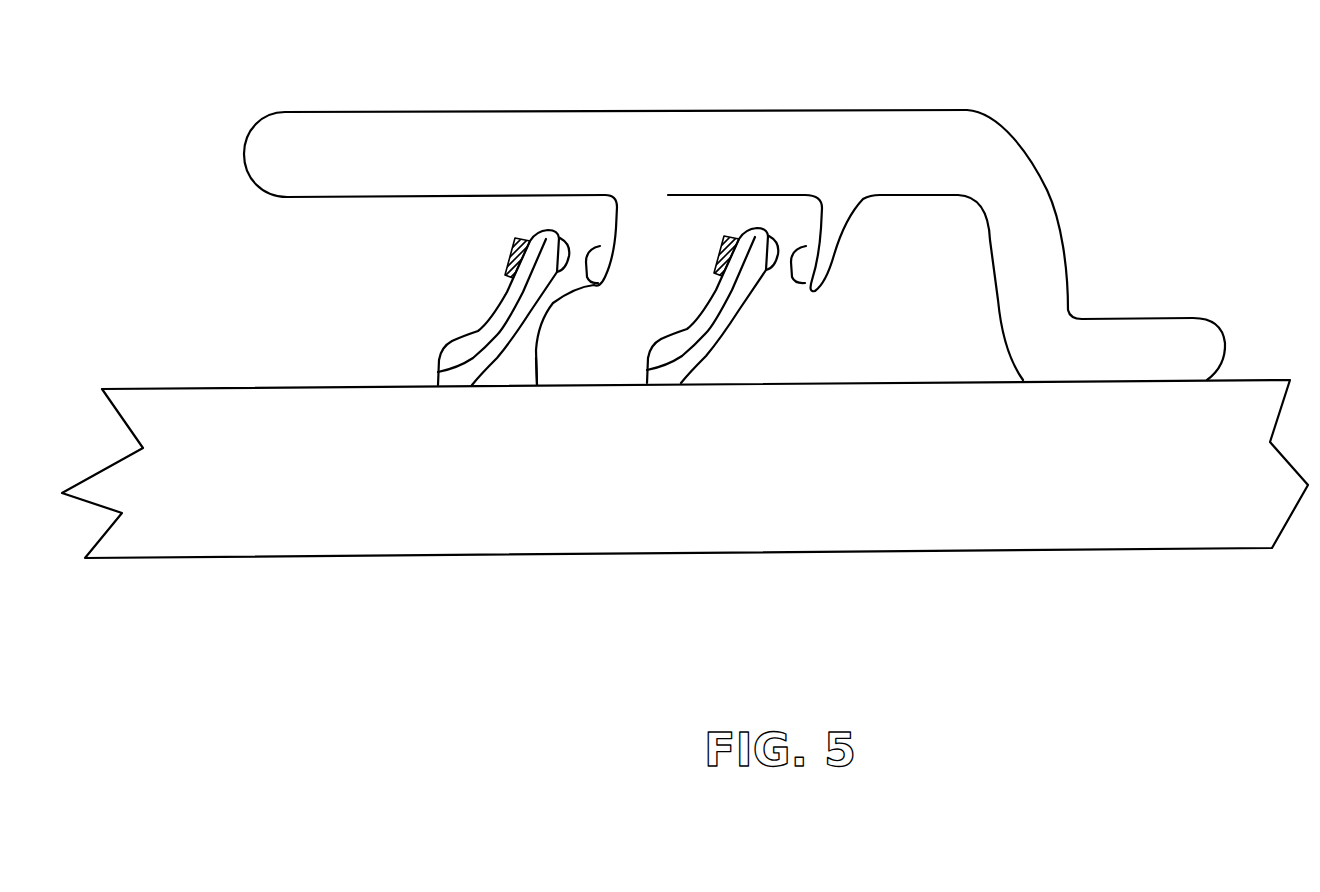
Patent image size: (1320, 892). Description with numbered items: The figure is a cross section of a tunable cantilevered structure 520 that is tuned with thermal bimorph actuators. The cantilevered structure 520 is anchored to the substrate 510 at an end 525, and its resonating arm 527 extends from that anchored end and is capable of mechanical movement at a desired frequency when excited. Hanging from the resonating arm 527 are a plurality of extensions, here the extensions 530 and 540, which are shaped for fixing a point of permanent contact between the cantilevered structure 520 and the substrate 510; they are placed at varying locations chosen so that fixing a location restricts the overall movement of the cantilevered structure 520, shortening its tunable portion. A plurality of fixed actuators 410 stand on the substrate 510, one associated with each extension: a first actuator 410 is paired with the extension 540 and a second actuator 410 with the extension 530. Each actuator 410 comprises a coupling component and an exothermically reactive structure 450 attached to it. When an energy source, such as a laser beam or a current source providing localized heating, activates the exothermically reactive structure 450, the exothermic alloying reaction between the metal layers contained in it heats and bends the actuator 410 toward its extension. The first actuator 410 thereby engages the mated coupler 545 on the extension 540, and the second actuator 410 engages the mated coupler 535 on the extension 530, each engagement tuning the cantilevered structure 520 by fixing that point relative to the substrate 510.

The actuator 410 is at (472, 332).
The exothermically reactive structure 450 is at (508, 262).
The substrate 510 is at (922, 517).
The cantilevered structure 520 is at (1016, 110).
The end 525 is at (1107, 357).
The resonating arm 527 is at (440, 88).
The extension 530 is at (833, 245).
The mated coupler 535 is at (790, 282).
The extension 540 is at (611, 290).
The mated coupler 545 is at (537, 385).